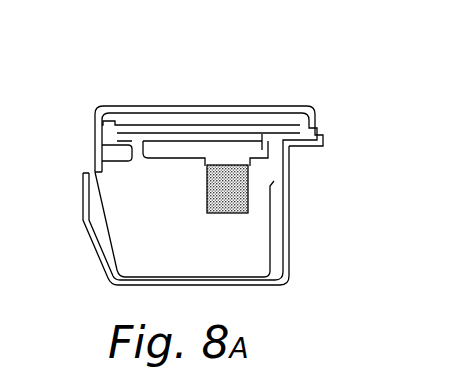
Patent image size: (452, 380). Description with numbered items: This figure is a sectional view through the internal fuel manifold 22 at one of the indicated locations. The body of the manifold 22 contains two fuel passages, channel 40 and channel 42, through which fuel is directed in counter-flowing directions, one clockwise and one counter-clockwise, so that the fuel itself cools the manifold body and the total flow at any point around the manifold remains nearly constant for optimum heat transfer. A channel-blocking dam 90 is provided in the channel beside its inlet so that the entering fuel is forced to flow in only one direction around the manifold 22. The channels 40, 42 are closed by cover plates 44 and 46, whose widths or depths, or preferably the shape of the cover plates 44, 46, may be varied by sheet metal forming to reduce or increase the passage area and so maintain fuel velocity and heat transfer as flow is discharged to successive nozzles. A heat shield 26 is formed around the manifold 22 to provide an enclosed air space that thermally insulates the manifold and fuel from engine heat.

The manifold 22 is at (143, 240).
The heat shield 26 is at (223, 103).
The channel 40 is at (252, 178).
The channel 42 is at (166, 136).
The cover plate 44 is at (186, 164).
The cover plate 46 is at (180, 123).
The channel-blocking dam 90 is at (240, 162).